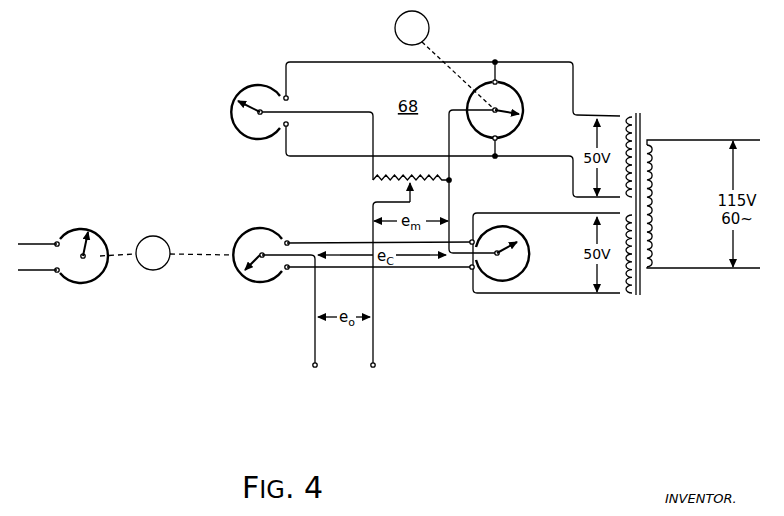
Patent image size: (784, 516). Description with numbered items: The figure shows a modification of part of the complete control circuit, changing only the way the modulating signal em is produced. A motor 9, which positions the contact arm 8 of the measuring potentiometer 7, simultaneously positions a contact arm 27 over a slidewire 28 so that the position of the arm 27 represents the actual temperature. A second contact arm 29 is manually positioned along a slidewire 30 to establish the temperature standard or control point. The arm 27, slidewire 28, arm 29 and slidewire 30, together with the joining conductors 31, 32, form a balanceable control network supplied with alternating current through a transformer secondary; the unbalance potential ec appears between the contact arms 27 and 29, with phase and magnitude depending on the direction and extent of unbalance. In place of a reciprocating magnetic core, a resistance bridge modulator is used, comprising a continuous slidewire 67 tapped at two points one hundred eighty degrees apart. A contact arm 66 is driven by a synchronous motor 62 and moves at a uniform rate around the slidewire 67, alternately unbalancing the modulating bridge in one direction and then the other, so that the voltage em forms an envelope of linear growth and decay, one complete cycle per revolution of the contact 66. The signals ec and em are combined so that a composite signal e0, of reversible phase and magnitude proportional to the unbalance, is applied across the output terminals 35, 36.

The measuring potentiometer 7 is at (78, 283).
The contact arm 8 is at (80, 245).
The motor 9 is at (153, 270).
The contact arm 27 is at (252, 264).
The slidewire 28 is at (268, 283).
The contact arm 29 is at (509, 247).
The slidewire 30 is at (513, 236).
The joining conductor 31 is at (343, 243).
The joining conductor 32 is at (416, 268).
The terminal 35 is at (293, 323).
The terminal 36 is at (374, 377).
The synchronous motor 62 is at (395, 31).
The contact arm 66 is at (510, 113).
The slidewire 67 is at (521, 94).